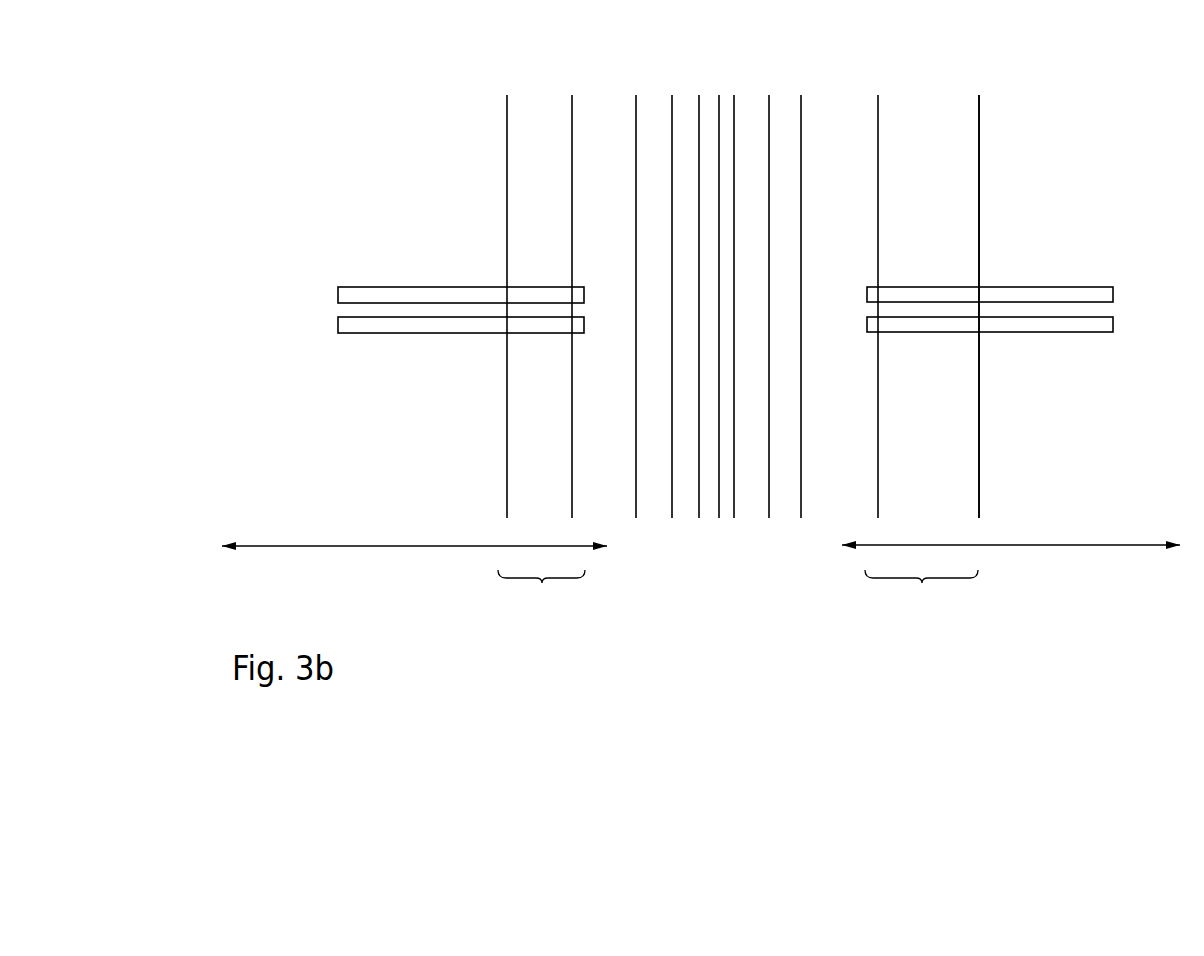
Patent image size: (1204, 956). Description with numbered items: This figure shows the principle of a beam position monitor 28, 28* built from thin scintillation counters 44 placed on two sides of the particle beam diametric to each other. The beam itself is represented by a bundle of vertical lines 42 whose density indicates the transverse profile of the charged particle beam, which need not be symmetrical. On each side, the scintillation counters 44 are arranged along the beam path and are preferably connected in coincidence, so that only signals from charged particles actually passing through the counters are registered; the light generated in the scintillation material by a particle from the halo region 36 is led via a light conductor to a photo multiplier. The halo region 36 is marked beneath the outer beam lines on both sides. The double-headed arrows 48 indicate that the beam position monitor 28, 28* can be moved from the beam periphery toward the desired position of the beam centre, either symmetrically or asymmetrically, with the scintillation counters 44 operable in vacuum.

The beam position monitor 28 is at (266, 134).
The lines 42 is at (979, 158).
The scintillation counters 44 is at (1113, 287).
The double-headed arrows 48 is at (300, 546).
The halo region 36 is at (738, 593).